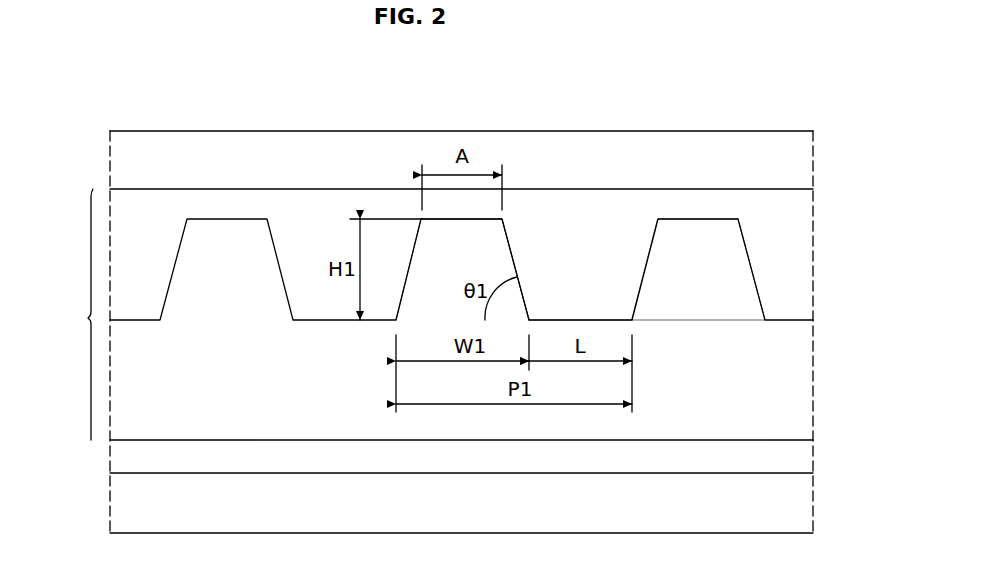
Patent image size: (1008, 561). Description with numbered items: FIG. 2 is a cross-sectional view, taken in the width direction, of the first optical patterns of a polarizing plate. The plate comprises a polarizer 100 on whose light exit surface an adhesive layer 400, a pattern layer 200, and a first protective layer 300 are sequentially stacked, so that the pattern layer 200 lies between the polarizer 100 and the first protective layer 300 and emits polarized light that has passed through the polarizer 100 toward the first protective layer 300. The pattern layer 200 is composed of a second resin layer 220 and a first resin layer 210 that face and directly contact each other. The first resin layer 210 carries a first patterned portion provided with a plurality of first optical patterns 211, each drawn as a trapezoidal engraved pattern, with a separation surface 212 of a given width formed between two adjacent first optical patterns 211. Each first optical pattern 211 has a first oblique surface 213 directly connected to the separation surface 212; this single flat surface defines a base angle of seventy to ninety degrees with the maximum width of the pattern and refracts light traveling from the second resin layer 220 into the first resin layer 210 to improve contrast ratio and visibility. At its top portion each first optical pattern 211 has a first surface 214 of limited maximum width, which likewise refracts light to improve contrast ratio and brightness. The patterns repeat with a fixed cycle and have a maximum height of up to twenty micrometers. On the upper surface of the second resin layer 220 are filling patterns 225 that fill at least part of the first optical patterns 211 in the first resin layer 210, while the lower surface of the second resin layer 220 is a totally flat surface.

The polarizer 100 is at (110, 515).
The pattern layer 200 is at (66, 314).
The first resin layer 210 is at (813, 259).
The first optical pattern 211 is at (408, 252).
The separation surface 212 is at (590, 320).
The first oblique surface 213 is at (512, 258).
The first surface 214 is at (448, 219).
The second resin layer 220 is at (813, 394).
The filling pattern 225 is at (700, 262).
The first protective layer 300 is at (110, 162).
The adhesive layer 400 is at (110, 460).